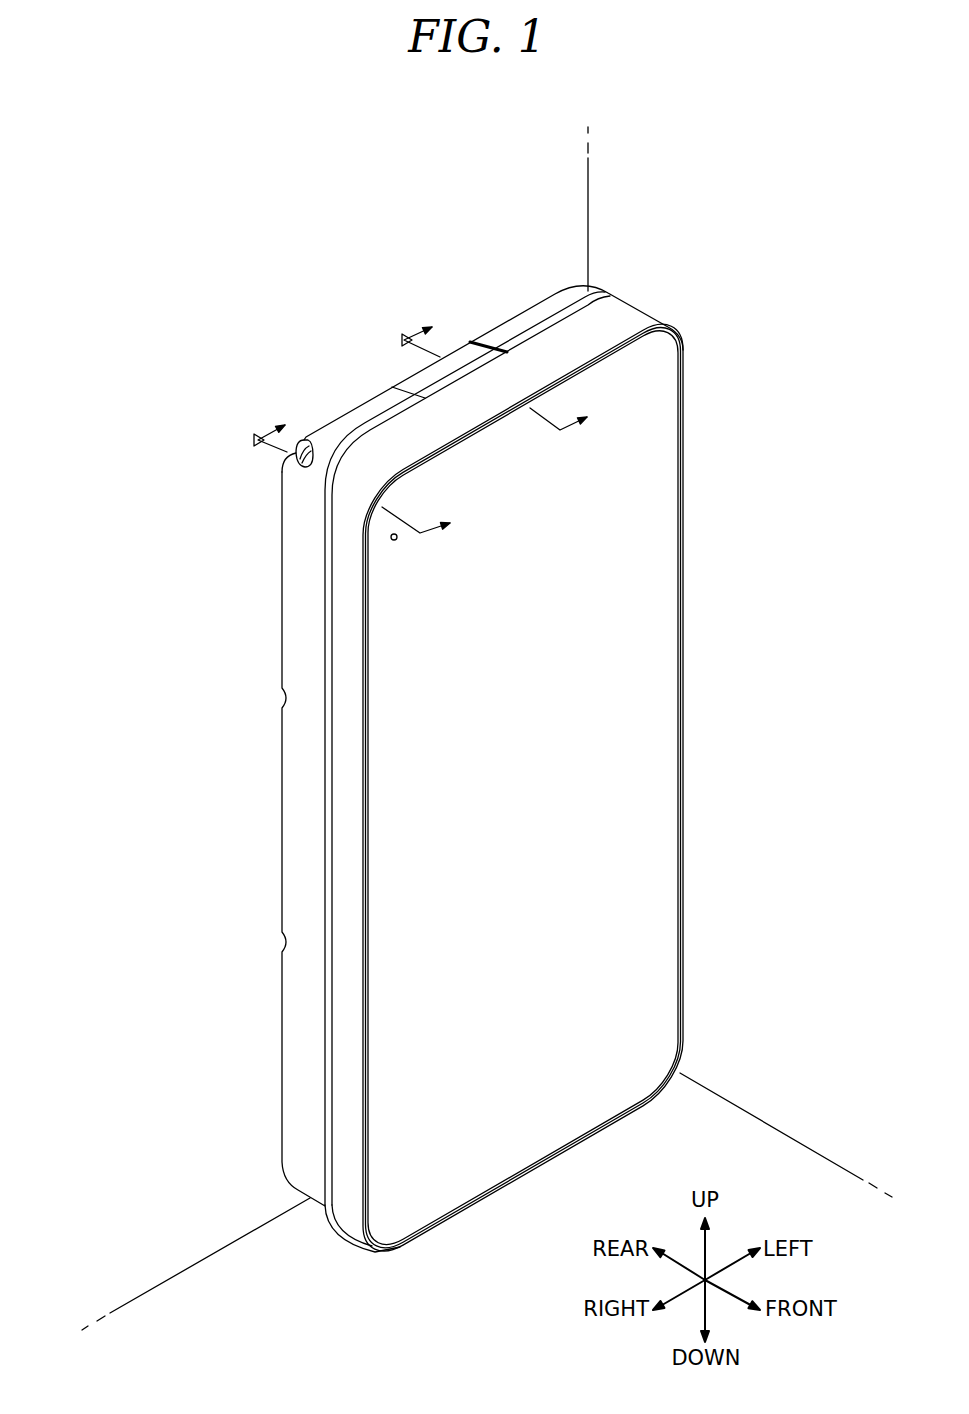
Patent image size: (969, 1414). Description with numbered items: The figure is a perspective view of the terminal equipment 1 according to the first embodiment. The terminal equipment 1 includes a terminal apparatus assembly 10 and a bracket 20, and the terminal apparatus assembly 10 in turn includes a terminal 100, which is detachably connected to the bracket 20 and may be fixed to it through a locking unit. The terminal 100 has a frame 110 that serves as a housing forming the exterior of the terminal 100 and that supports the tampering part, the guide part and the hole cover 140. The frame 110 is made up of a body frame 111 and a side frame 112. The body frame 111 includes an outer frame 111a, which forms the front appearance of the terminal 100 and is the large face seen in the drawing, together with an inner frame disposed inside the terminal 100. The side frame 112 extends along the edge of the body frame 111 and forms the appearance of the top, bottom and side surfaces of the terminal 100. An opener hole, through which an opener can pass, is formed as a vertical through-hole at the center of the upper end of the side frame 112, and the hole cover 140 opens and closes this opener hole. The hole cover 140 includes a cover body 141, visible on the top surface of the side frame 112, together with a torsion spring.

The terminal equipment 1 is at (443, 172).
The terminal apparatus assembly 10 is at (420, 689).
The terminal 100 is at (708, 434).
The frame 110 is at (137, 657).
The body frame 111 is at (410, 787).
The outer frame 111a is at (395, 630).
The side frame 112 is at (297, 587).
The hole cover 140 is at (403, 344).
The cover body 141 is at (420, 377).
The bracket 20 is at (298, 459).